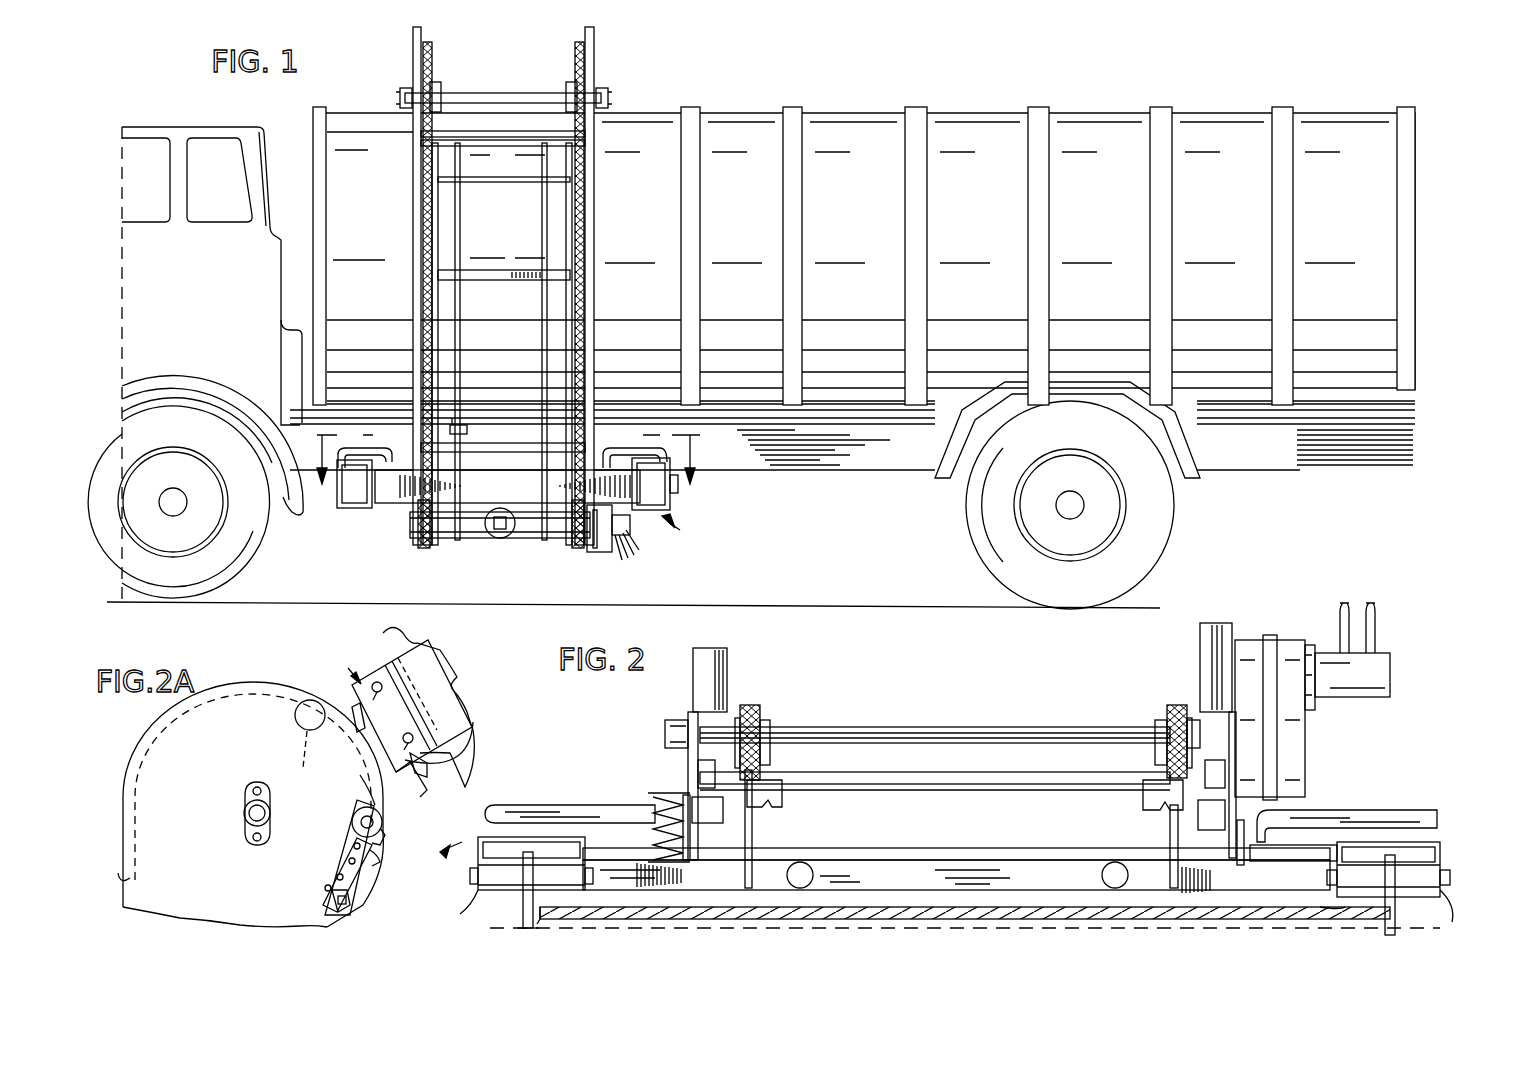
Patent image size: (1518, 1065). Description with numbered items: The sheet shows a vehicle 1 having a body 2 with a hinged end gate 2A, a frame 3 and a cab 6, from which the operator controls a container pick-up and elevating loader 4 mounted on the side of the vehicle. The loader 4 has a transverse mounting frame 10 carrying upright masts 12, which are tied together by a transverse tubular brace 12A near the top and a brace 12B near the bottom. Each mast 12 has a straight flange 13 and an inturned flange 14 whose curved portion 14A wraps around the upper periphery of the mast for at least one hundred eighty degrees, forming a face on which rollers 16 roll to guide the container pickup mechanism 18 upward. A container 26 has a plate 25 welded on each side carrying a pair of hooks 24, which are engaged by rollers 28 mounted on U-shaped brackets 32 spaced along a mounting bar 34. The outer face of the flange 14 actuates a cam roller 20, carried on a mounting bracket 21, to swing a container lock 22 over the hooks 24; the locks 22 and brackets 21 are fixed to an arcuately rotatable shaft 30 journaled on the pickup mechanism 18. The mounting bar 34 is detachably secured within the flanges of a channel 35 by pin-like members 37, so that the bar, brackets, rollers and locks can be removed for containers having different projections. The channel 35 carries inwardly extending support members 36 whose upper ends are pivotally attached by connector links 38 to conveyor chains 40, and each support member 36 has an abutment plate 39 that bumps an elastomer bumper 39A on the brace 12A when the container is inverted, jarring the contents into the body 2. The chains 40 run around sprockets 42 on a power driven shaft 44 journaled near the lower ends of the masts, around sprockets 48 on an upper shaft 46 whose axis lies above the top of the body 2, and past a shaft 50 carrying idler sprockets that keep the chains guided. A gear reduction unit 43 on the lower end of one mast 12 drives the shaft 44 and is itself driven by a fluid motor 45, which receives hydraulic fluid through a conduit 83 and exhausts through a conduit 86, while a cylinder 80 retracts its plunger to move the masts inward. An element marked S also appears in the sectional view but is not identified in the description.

In FIG. 1, the vehicle 1 is at (249, 118).
In FIG. 1, the body 2 is at (955, 113).
In FIG. 1, the end gate 2A is at (1403, 107).
In FIG. 1, the frame 3 is at (902, 462).
In FIG. 1, the container loader 4 is at (520, 307).
In FIG. 2, the container loader 4 is at (733, 692).
In FIG. 1, the cab 6 is at (270, 230).
In FIG. 2, the transverse mounting frame 10 is at (722, 660).
In FIG. 1, the upright mast 12 is at (410, 218).
In FIG. 2, the upright mast 12 is at (690, 712).
In FIG. 2A, the upright mast 12 is at (238, 908).
In FIG. 1, the transverse tubular brace 12A is at (472, 140).
In FIG. 2A, the transverse tubular brace 12A is at (320, 893).
In FIG. 1, the brace 12B is at (451, 425).
In FIG. 2, the straight flange 13 is at (765, 745).
In FIG. 2, the inturned flange 14 is at (740, 800).
In FIG. 2A, the inturned flange 14 is at (130, 878).
In FIG. 2A, the curved portion 14A is at (380, 862).
In FIG. 2, the rollers 16 is at (700, 770).
In FIG. 2A, the rollers 16 is at (303, 765).
In FIG. 1, the container pickup mechanism 18 is at (680, 530).
In FIG. 2, the container pickup mechanism 18 is at (462, 842).
In FIG. 2A, the container pickup mechanism 18 is at (352, 672).
In FIG. 2, the cam roller 20 is at (722, 815).
In FIG. 2A, the cam roller 20 is at (360, 783).
In FIG. 2, the mounting bracket 21 is at (688, 800).
In FIG. 2A, the mounting bracket 21 is at (352, 700).
In FIG. 1, the container lock 22 is at (392, 448).
In FIG. 2, the container lock 22 is at (610, 805).
In FIG. 2A, the container lock 22 is at (418, 777).
In FIG. 2, the hooks 24 is at (527, 850).
In FIG. 2A, the hooks 24 is at (427, 800).
In FIG. 2A, the plate 25 is at (455, 705).
In FIG. 2, the container 26 is at (880, 890).
In FIG. 2A, the container 26 is at (473, 745).
In FIG. 1, the rollers 28 is at (348, 468).
In FIG. 2, the rollers 28 is at (490, 880).
In FIG. 2, the arcuately rotatable shaft 30 is at (858, 868).
In FIG. 2, the U-shaped brackets 32 is at (470, 892).
In FIG. 1, the mounting bar 34 is at (400, 495).
In FIG. 2, the mounting bar 34 is at (1345, 895).
In FIG. 2, the channel 35 is at (1003, 870).
In FIG. 2, the inwardly extending support members 36 is at (800, 872).
In FIG. 2, the pin-like members 37 is at (752, 880).
In FIG. 2, the connector links 38 is at (765, 772).
In FIG. 2, the abutment plate 39 is at (870, 778).
In FIG. 2A, the abutment plate 39 is at (385, 835).
In FIG. 2A, the elastomer bumper 39A is at (333, 887).
In FIG. 1, the conveyor chains 40 is at (570, 305).
In FIG. 2, the conveyor chains 40 is at (762, 722).
In FIG. 1, the sprockets 42 is at (423, 545).
In FIG. 2, the sprockets 42 is at (752, 712).
In FIG. 1, the gear reduction unit 43 is at (605, 552).
In FIG. 2, the gear reduction unit 43 is at (1255, 640).
In FIG. 1, the power driven shaft 44 is at (556, 528).
In FIG. 2, the power driven shaft 44 is at (960, 727).
In FIG. 1, the fluid motor 45 is at (632, 532).
In FIG. 2, the fluid motor 45 is at (1350, 698).
In FIG. 1, the shaft 46 is at (520, 93).
In FIG. 2A, the shaft 46 is at (245, 810).
In FIG. 1, the sprockets 48 is at (578, 36).
In FIG. 1, the shaft 50 is at (527, 182).
In FIG. 1, the cylinder 80 is at (495, 530).
In FIG. 2, the conduit 83 is at (1371, 602).
In FIG. 2, the conduit 86 is at (1344, 602).
In FIG. 2, the spring S is at (652, 812).